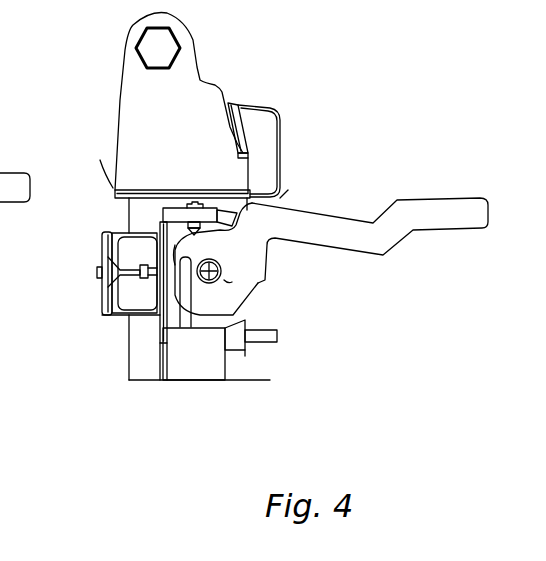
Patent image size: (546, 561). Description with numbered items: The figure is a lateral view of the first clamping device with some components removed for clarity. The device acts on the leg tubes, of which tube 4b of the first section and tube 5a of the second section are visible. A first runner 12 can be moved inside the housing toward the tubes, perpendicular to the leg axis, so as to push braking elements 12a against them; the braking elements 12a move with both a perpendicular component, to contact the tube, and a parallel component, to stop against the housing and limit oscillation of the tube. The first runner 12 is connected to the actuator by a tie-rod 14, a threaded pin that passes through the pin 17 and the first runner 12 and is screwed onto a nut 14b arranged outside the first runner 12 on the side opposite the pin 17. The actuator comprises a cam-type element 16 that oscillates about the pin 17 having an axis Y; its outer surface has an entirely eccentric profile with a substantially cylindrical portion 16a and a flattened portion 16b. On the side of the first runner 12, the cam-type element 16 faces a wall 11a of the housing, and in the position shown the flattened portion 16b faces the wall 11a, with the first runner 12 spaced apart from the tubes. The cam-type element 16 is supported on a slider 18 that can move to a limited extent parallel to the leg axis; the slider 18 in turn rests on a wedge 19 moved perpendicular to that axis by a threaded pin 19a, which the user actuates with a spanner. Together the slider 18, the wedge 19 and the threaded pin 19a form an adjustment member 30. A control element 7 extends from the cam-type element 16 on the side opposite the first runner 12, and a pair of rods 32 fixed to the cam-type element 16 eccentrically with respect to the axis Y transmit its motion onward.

The control element 7 is at (448, 196).
The wall 11a is at (143, 240).
The first runner 12 is at (92, 304).
The braking elements 12a is at (160, 227).
The tie-rod 14 is at (157, 295).
The nut 14b is at (97, 273).
The cam-type element 16 is at (234, 245).
The substantially cylindrical portion 16a is at (185, 327).
The flattened portion 16b is at (178, 255).
The pin 17 is at (222, 270).
The slider 18 is at (228, 318).
The wedge 19 is at (235, 347).
The threaded pin 19a is at (272, 343).
The adjustment member 30 is at (262, 357).
The rods 32 is at (167, 335).
The tube 4b is at (145, 378).
The tube 5a is at (210, 370).
The axis Y is at (228, 282).